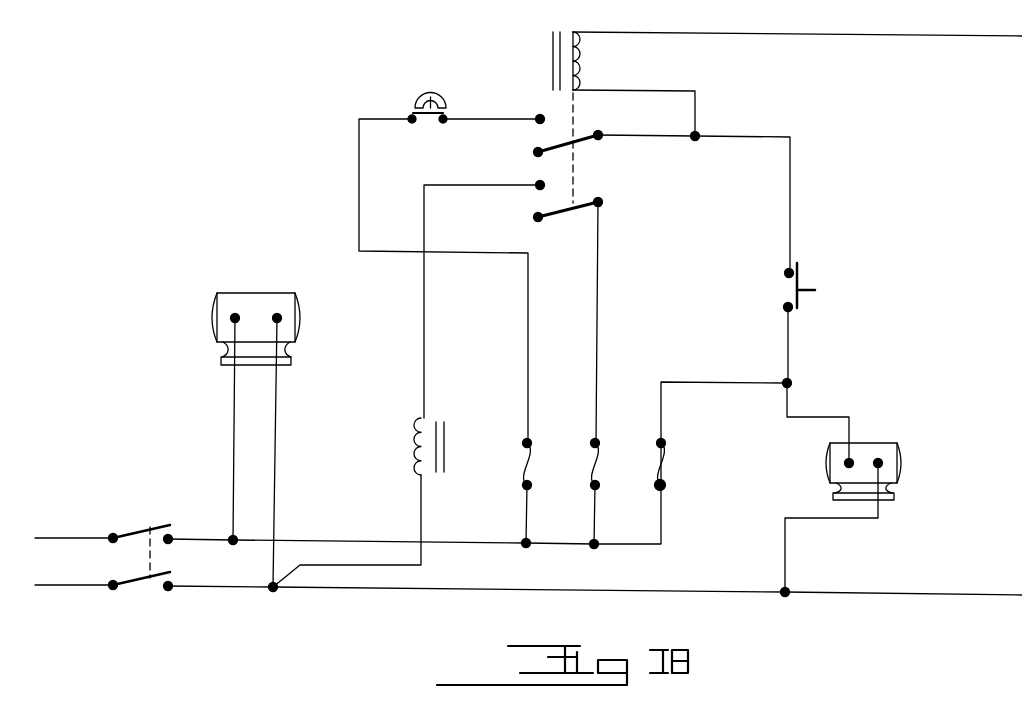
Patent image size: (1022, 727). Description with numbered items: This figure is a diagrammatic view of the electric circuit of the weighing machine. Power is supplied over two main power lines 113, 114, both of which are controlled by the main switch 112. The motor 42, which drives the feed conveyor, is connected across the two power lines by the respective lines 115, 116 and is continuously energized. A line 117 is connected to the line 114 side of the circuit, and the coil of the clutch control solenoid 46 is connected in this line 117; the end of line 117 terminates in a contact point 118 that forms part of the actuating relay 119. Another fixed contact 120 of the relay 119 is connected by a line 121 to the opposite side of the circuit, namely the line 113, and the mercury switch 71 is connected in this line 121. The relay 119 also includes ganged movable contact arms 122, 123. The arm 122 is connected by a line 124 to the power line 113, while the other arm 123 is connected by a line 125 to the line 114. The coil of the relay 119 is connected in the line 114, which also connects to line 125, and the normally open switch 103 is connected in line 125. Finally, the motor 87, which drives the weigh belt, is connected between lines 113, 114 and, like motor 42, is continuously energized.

The actuating relay 119 is at (553, 47).
The mercury switch 71 is at (426, 95).
The line 121 is at (358, 160).
The fixed contact 120 is at (538, 116).
The movable contact arm 123 is at (588, 134).
The line 125 is at (731, 137).
The contact point 118 is at (538, 182).
The movable contact arm 122 is at (588, 203).
The line 124 is at (597, 301).
The switch 103 is at (797, 277).
The main power line 113 is at (55, 538).
The main power line 114 is at (55, 585).
The main switch 112 is at (138, 540).
The motor 42 is at (218, 300).
The line 115 is at (232, 462).
The line 116 is at (278, 452).
The clutch control solenoid 46 is at (415, 432).
The line 117 is at (420, 500).
The motor 87 is at (893, 447).